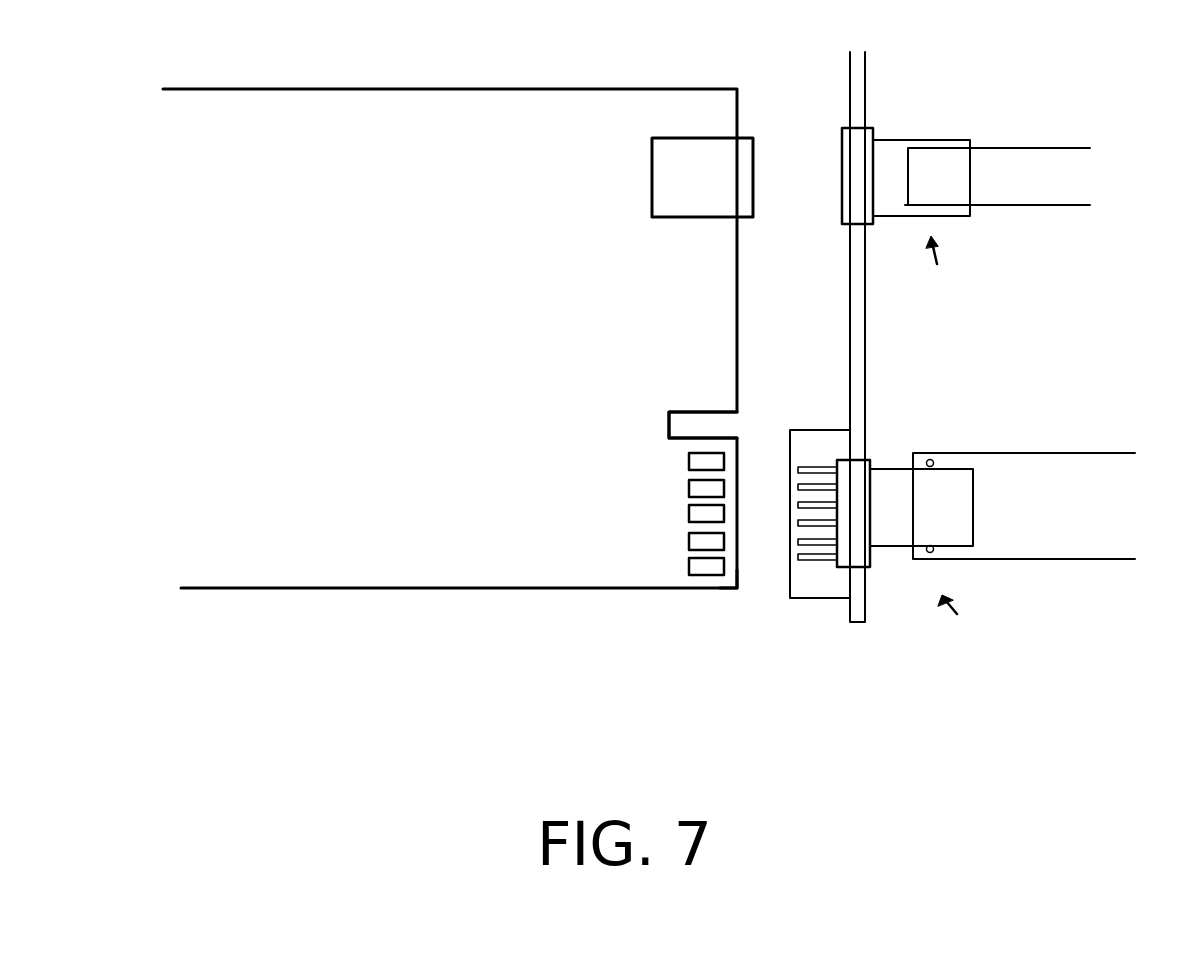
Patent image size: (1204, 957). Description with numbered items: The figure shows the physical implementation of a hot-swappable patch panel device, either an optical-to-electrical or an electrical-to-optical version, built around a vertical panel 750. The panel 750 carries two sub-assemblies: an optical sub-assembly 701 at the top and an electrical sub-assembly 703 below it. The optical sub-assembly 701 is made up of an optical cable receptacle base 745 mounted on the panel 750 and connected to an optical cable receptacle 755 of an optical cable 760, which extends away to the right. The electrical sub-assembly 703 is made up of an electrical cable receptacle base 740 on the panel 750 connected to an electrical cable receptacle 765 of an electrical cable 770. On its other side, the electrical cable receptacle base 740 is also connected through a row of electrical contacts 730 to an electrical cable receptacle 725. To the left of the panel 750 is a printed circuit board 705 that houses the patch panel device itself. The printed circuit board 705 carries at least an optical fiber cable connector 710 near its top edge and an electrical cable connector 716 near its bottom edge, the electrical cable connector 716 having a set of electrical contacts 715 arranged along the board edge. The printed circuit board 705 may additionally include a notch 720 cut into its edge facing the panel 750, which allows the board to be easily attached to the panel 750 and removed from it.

The optical sub-assembly 701 is at (959, 256).
The electrical sub-assembly 703 is at (969, 617).
The printed circuit board 705 is at (498, 101).
The optical fiber cable connector 710 is at (743, 158).
The electrical contacts 715 is at (708, 570).
The electrical cable connector 716 is at (730, 586).
The notch 720 is at (664, 422).
The electrical cable receptacle 725 is at (800, 448).
The electrical contacts 730 is at (798, 552).
The electrical cable receptacle base 740 is at (866, 557).
The optical cable receptacle base 745 is at (850, 152).
The panel 750 is at (862, 78).
The optical cable receptacle 755 is at (888, 150).
The optical cable 760 is at (1020, 157).
The electrical cable receptacle 765 is at (895, 478).
The electrical cable 770 is at (1050, 462).